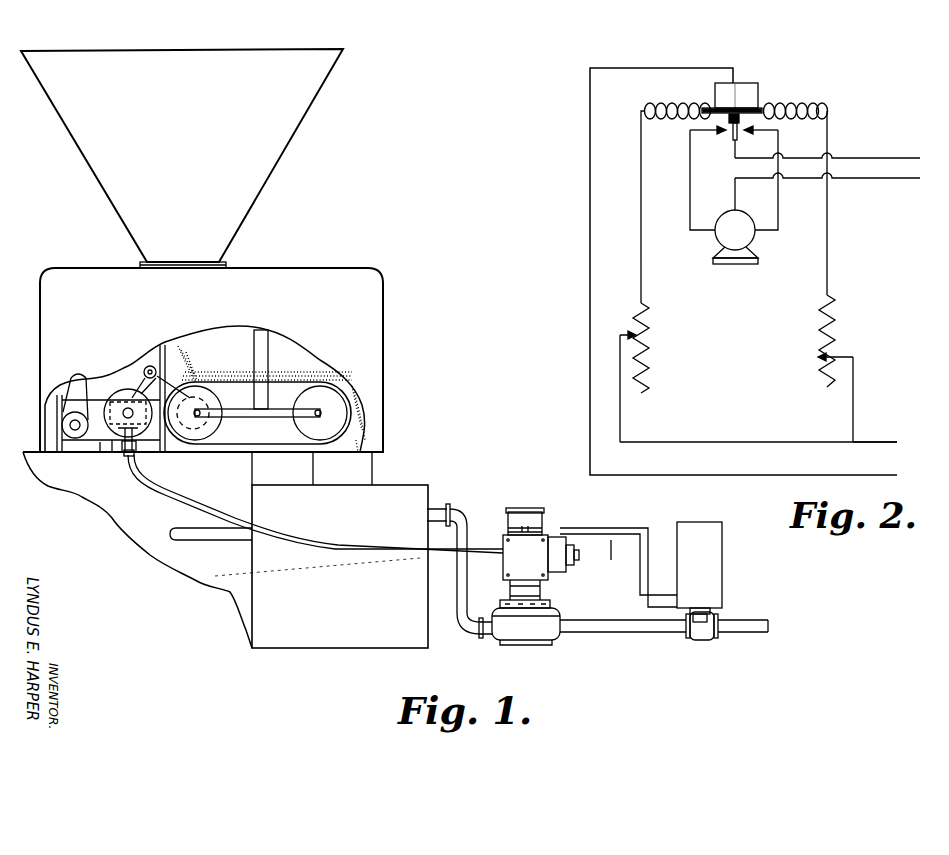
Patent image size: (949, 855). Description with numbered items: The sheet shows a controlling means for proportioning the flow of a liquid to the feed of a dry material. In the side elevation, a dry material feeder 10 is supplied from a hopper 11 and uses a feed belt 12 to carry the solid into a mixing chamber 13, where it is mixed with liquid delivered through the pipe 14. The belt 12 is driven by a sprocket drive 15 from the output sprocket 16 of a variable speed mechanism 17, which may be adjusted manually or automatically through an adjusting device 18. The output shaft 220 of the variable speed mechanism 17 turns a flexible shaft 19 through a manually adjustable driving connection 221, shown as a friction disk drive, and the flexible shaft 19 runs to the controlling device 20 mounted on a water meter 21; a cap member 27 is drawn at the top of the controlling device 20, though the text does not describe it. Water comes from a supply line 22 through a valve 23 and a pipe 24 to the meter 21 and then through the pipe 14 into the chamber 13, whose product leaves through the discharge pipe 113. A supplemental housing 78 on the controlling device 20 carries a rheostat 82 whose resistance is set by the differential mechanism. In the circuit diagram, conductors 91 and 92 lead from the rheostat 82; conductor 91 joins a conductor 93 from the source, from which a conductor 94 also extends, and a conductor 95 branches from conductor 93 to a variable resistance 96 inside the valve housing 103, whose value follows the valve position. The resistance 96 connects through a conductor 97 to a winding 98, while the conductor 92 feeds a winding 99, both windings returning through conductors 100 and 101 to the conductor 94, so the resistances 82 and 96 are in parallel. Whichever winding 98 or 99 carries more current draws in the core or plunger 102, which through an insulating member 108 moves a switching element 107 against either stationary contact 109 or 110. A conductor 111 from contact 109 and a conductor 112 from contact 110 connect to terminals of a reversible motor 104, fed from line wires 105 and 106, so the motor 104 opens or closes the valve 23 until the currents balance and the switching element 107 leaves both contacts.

In FIG. 1, the dry material feeder 10 is at (366, 297).
In FIG. 1, the hopper 11 is at (240, 186).
In FIG. 1, the belt 12 is at (300, 380).
In FIG. 1, the mixing chamber 13 is at (398, 486).
In FIG. 1, the pipe 14 is at (455, 510).
In FIG. 1, the sprocket drive 15 is at (165, 360).
In FIG. 1, the output sprocket 16 is at (123, 385).
In FIG. 1, the variable speed mechanism 17 is at (98, 456).
In FIG. 1, the adjusting device 18 is at (64, 430).
In FIG. 1, the flexible shaft 19 is at (318, 540).
In FIG. 1, the controlling device 20 is at (535, 540).
In FIG. 1, the water meter 21 is at (545, 605).
In FIG. 1, the supply line 22 is at (738, 628).
In FIG. 1, the valve 23 is at (700, 634).
In FIG. 1, the pipe 24 is at (614, 634).
In FIG. 1, the motor cap 27 is at (530, 510).
In FIG. 1, the supplemental housing 78 is at (580, 553).
In FIG. 2, the rheostat 82 is at (653, 335).
In FIG. 1, the conductor 91 is at (614, 562).
In FIG. 2, the conductor 91 is at (663, 442).
In FIG. 1, the conductor 92 is at (618, 528).
In FIG. 2, the conductor 92 is at (643, 260).
In FIG. 2, the conductor 93 is at (862, 442).
In FIG. 2, the conductor 94 is at (665, 68).
In FIG. 2, the conductor 95 is at (853, 382).
In FIG. 2, the variable resistance 96 is at (836, 322).
In FIG. 2, the conductor 97 is at (829, 248).
In FIG. 2, the winding 98 is at (800, 103).
In FIG. 2, the winding 99 is at (660, 100).
In FIG. 2, the conductor 100 is at (764, 92).
In FIG. 2, the conductor 101 is at (714, 96).
In FIG. 2, the core or plunger 102 is at (731, 108).
In FIG. 1, the housing 103 is at (712, 558).
In FIG. 2, the motor 104 is at (737, 238).
In FIG. 2, the line wire 105 is at (845, 158).
In FIG. 2, the line wire 106 is at (852, 180).
In FIG. 2, the switching element 107 is at (734, 142).
In FIG. 2, the insulating member 108 is at (742, 118).
In FIG. 2, the stationary contact 109 is at (760, 136).
In FIG. 2, the stationary contact 110 is at (710, 131).
In FIG. 2, the conductor 111 is at (780, 200).
In FIG. 2, the conductor 112 is at (690, 198).
In FIG. 1, the discharge pipe 113 is at (200, 532).
In FIG. 1, the output shaft 220 is at (150, 452).
In FIG. 1, the manually adjustable driving connection 221 is at (112, 458).